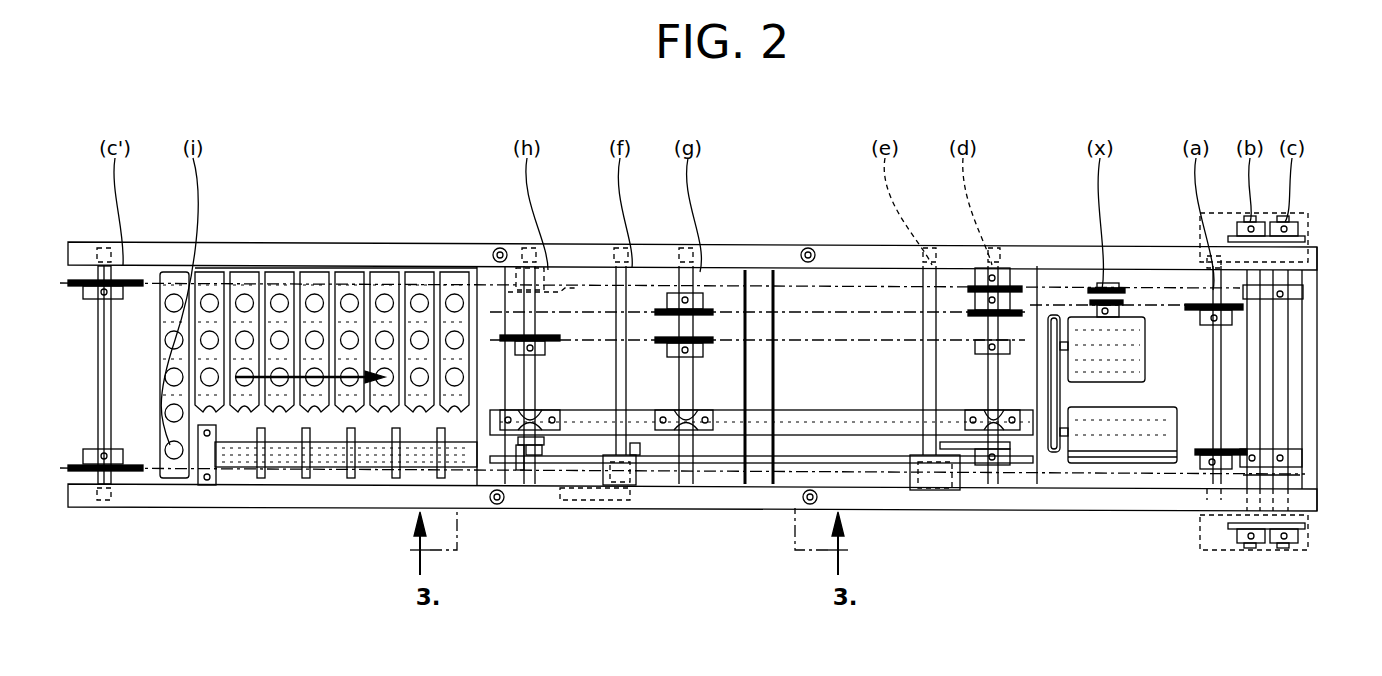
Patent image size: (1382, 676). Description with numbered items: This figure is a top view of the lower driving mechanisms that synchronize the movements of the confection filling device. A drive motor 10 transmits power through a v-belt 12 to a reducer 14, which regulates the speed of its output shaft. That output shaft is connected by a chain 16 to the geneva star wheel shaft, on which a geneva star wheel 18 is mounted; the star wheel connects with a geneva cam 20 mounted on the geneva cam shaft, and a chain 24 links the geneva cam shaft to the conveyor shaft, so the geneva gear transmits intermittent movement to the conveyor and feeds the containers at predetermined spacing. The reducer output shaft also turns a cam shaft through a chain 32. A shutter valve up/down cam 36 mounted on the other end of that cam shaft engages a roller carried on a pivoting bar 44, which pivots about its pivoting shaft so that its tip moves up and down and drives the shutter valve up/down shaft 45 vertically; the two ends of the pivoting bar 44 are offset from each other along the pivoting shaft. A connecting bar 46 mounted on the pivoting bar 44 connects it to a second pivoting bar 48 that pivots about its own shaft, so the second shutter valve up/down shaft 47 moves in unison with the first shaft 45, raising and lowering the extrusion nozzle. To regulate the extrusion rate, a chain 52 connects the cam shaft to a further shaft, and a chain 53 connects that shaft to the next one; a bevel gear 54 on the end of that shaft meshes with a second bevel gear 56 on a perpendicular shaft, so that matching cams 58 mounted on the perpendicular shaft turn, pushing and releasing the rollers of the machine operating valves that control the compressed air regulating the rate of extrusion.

The drive motor 10 is at (1125, 447).
The v-belt 12 is at (1048, 412).
The reducer 14 is at (1095, 360).
The chain 16 is at (1163, 320).
The geneva star wheel 18 is at (1203, 466).
The geneva cam 20 is at (1243, 456).
The chain 24 is at (1278, 262).
The chain 32 is at (1050, 320).
The shutter valve up/down cam 36 is at (972, 452).
The pivoting bar 44 is at (855, 505).
The shutter valve up/down shaft 45 is at (813, 250).
The connecting bar 46 is at (720, 463).
The shutter valve up/down shaft 47 is at (500, 247).
The second pivoting bar 48 is at (582, 500).
The chain 52 is at (790, 308).
The chain 53 is at (588, 325).
The bevel gear 54 is at (538, 448).
The second bevel gear 56 is at (523, 448).
The matching cams 58 is at (394, 480).